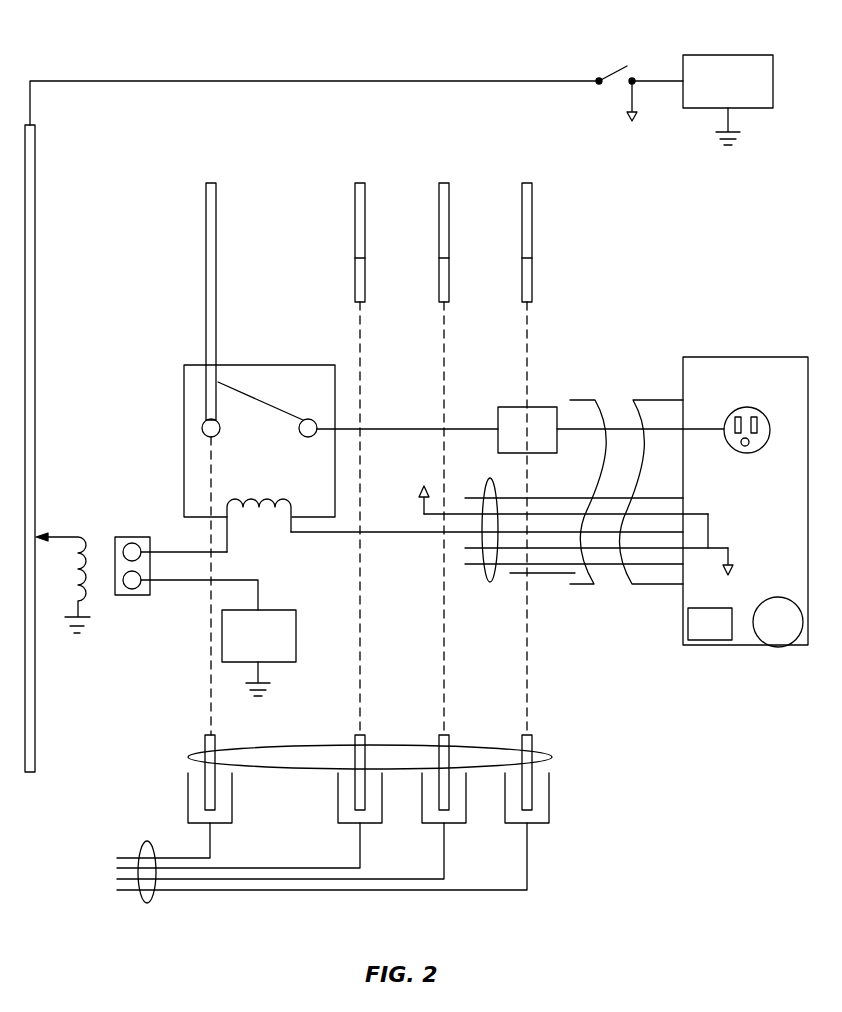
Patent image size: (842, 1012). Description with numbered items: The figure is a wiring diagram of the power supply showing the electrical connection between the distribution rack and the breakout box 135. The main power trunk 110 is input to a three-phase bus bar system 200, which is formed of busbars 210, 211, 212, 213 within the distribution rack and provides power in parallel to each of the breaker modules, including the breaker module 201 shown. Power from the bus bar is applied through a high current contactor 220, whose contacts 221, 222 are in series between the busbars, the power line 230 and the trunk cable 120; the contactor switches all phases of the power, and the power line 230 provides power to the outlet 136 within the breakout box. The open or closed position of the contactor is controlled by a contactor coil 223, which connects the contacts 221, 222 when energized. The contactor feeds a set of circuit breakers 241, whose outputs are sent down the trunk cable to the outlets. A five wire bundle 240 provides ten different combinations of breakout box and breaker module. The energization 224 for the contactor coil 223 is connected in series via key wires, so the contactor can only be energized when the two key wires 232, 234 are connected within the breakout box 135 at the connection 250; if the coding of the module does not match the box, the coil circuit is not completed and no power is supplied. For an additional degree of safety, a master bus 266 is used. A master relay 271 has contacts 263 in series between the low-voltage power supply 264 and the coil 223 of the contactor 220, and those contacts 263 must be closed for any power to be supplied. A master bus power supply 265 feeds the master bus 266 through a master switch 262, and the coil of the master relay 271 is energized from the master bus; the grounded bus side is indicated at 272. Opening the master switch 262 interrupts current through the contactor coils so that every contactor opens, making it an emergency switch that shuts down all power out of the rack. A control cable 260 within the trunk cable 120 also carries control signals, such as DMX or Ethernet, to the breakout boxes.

The main power trunk 110 is at (147, 903).
The trunk cable 120 is at (583, 587).
The breakout box 135 is at (703, 355).
The outlet 136 is at (747, 408).
The bus bar system 200 is at (551, 759).
The breaker module 201 is at (157, 382).
The busbar 210 is at (214, 183).
The busbar 211 is at (363, 183).
The busbar 212 is at (447, 183).
The busbar 213 is at (530, 183).
The high current contactor 220 is at (184, 445).
The contact 221 is at (220, 430).
The contact 222 is at (311, 420).
The contactor coil 223 is at (267, 497).
The energization 224 is at (317, 532).
The power line 230 is at (378, 432).
The key wire 232 is at (650, 550).
The key wire 234 is at (665, 515).
The five wire bundle 240 is at (490, 582).
The circuit breakers 241 is at (545, 405).
The key wire connection 250 is at (710, 537).
The control cable 260 is at (540, 574).
The master switch 262 is at (600, 87).
The master relay contacts 263 is at (142, 595).
The low-voltage power supply 264 is at (283, 662).
The master bus power supply 265 is at (747, 55).
The master bus 266 is at (35, 250).
The master relay 271 is at (78, 607).
The ground connection 272 is at (82, 643).